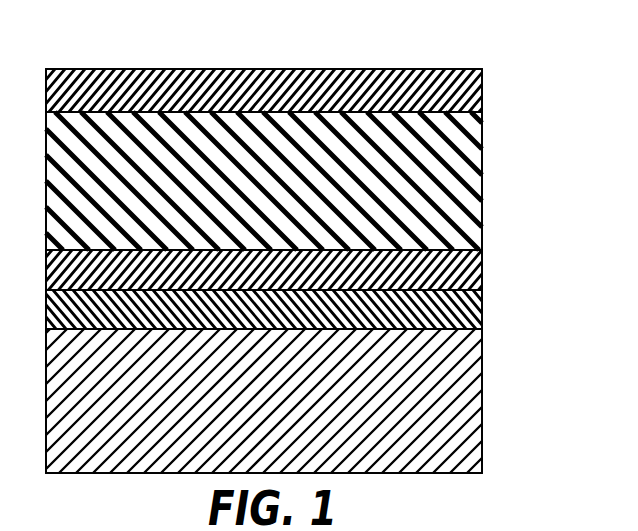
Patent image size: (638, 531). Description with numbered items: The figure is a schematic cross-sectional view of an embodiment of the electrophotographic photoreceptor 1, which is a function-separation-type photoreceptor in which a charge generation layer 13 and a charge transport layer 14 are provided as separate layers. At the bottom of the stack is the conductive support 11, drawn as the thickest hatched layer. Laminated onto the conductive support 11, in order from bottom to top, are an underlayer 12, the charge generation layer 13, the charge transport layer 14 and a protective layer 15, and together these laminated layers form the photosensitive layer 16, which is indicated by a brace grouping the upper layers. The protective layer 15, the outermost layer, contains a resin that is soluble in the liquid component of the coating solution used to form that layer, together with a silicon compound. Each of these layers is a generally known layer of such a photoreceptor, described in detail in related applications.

The electrophotographic photoreceptor 1 is at (436, 46).
The conductive support 11 is at (483, 373).
The underlayer 12 is at (483, 308).
The charge generation layer 13 is at (294, 269).
The charge transport layer 14 is at (483, 164).
The protective layer 15 is at (483, 90).
The photosensitive layer 16 is at (320, 179).